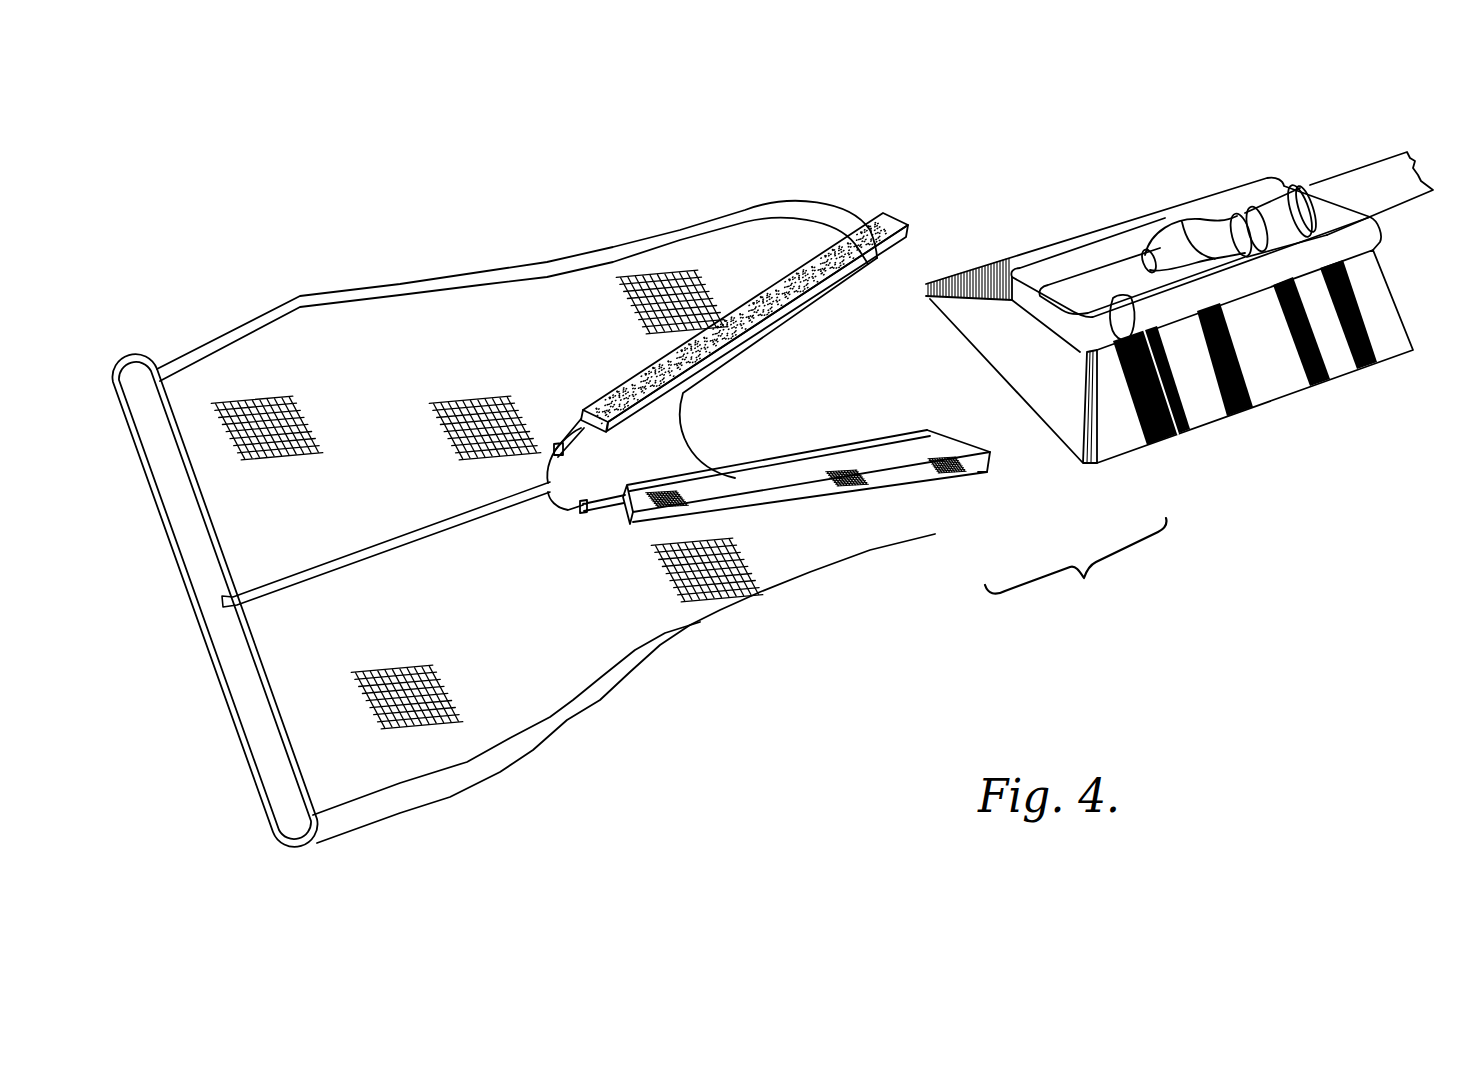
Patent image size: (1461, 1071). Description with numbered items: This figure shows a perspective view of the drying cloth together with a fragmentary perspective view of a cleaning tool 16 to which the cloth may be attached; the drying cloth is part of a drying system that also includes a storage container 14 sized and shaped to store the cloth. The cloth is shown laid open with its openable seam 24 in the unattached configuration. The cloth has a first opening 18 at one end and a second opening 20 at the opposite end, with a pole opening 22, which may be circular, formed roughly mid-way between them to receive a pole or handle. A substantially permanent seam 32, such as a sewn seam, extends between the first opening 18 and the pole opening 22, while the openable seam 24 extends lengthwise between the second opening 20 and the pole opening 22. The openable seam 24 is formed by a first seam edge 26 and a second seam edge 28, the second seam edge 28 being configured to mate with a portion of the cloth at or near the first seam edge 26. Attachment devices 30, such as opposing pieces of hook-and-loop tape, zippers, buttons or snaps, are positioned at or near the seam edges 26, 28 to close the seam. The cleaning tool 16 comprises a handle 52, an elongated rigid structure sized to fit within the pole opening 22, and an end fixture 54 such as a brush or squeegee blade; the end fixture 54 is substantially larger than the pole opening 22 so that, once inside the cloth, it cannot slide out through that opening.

The storage container 14 is at (508, 297).
The cleaning tool 16 is at (1187, 274).
The first opening 18 is at (262, 726).
The second opening 20 is at (888, 310).
The pole opening 22 is at (567, 497).
The openable seam 24 is at (968, 458).
The first seam edge 26 is at (812, 262).
The second seam edge 28 is at (901, 488).
The attachment devices 30 is at (879, 238).
The permanent seam 32 is at (364, 553).
The handle 52 is at (1378, 186).
The end fixture 54 is at (1281, 381).